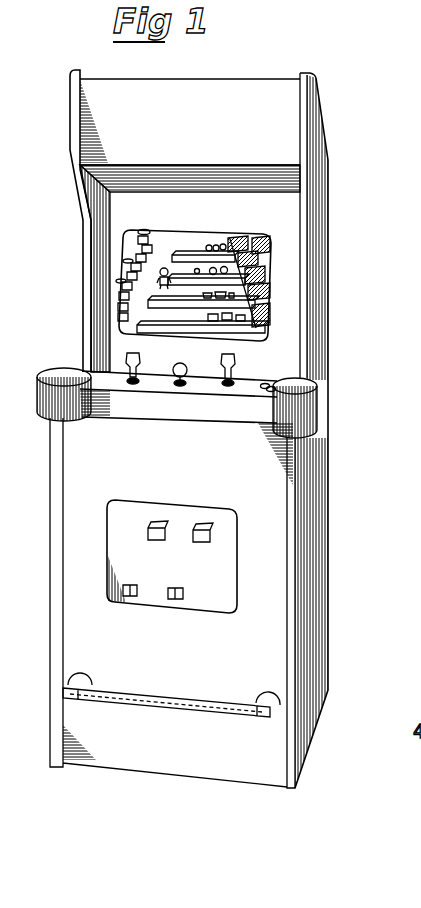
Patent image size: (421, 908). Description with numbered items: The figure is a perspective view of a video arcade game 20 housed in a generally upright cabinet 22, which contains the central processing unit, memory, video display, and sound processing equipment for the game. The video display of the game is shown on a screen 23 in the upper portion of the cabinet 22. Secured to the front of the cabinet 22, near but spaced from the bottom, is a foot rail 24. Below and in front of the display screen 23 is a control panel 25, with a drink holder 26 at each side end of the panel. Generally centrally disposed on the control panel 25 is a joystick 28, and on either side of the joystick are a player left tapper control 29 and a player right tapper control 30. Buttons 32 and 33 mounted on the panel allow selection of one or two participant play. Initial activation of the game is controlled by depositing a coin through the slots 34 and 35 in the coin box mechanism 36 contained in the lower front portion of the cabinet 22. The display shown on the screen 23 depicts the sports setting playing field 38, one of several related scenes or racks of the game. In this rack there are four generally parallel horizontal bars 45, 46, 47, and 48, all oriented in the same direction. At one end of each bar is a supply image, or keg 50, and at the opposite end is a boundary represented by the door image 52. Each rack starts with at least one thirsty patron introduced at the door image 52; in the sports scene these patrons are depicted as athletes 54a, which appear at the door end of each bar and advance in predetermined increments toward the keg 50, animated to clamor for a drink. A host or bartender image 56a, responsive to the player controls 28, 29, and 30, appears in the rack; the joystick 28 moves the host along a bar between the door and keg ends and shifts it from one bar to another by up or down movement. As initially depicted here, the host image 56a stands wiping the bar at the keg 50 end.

The video arcade game 20 is at (247, 61).
The cabinet 22 is at (322, 165).
The screen 23 is at (266, 249).
The foot rail 24 is at (148, 708).
The control panel 25 is at (103, 380).
The drink holder 26 is at (50, 370).
The joystick 28 is at (175, 381).
The player left tapper control 29 is at (130, 365).
The player right tapper control 30 is at (218, 383).
The button 32 is at (272, 383).
The button 33 is at (263, 385).
The slot 34 is at (157, 523).
The slot 35 is at (202, 527).
The coin box mechanism 36 is at (239, 514).
The sports setting playing field 38 is at (232, 232).
The horizontal bar 45 is at (157, 328).
The horizontal bar 46 is at (177, 308).
The horizontal bar 47 is at (188, 286).
The horizontal bar 48 is at (190, 252).
The keg 50 is at (157, 232).
The door image 52 is at (260, 296).
The athletes 54a is at (257, 318).
The host image 56a is at (164, 270).